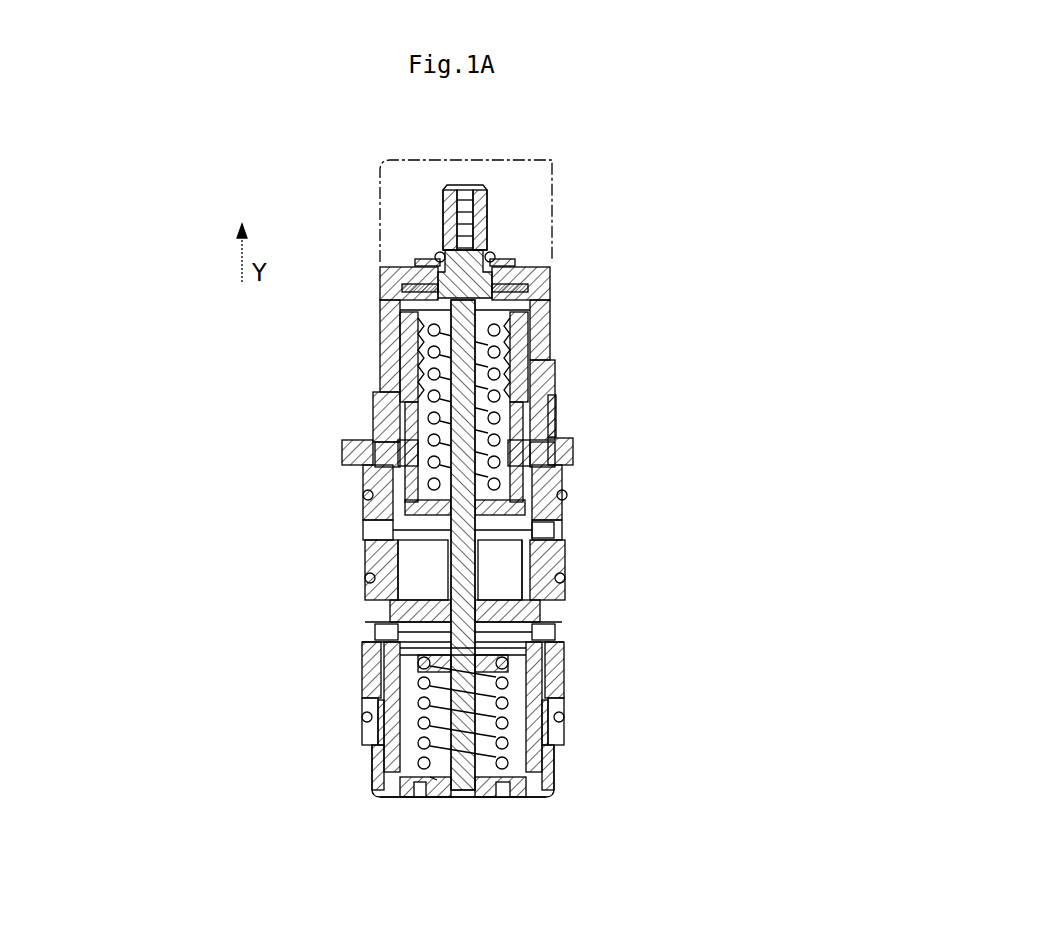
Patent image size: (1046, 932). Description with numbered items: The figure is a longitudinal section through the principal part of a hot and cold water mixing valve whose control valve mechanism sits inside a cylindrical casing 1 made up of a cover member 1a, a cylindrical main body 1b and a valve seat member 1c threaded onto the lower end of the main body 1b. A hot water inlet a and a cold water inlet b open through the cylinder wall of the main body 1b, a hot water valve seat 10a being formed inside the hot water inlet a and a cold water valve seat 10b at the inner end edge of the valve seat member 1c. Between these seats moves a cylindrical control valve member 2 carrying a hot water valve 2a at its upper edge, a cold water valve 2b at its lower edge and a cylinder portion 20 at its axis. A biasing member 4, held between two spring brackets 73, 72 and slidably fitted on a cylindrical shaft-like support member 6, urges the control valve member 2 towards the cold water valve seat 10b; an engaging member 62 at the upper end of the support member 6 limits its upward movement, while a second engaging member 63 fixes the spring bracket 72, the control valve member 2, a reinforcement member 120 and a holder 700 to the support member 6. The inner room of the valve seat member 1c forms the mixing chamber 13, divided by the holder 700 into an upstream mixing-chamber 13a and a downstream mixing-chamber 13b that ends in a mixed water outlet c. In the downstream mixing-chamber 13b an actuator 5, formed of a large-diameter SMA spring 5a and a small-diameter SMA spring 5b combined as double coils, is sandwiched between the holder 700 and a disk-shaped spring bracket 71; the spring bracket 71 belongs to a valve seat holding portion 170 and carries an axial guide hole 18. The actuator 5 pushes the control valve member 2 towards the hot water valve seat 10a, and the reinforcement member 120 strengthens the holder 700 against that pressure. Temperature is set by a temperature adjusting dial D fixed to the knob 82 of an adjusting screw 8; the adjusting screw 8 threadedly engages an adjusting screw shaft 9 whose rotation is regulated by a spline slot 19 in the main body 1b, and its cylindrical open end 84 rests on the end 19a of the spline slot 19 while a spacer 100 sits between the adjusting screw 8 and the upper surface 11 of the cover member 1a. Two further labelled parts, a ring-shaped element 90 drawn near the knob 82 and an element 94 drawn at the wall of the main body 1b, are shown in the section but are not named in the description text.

The casing 1 is at (508, 528).
The cover member 1a is at (503, 326).
The main body 1b is at (563, 515).
The valve seat member 1c is at (565, 728).
The control valve member 2 is at (406, 581).
The hot water valve 2a is at (390, 542).
The cold water valve 2b is at (367, 615).
The biasing member 4 is at (555, 432).
The actuator 5 is at (463, 849).
The SMA spring 5a is at (447, 800).
The SMA spring 5b is at (455, 800).
The support member 6 is at (484, 800).
The adjusting screw 8 is at (542, 193).
The adjusting screw shaft 9 is at (380, 323).
The hot water valve seat 10a is at (377, 528).
The cold water valve seat 10b is at (395, 640).
The upper surface 11 is at (495, 290).
The mixing chamber 13 is at (473, 723).
The upstream mixing-chamber 13a is at (398, 662).
The downstream mixing-chamber 13b is at (520, 762).
The guide hole 18 is at (555, 795).
The spline slot 19 is at (395, 418).
The end of spline slot 19a is at (387, 388).
The cylinder portion 20 is at (557, 570).
The engaging member 62 is at (530, 300).
The engaging member 63 is at (555, 696).
The spring bracket 71 is at (418, 797).
The spring bracket 72 is at (563, 507).
The spring bracket 73 is at (410, 317).
The knob 82 is at (487, 227).
The cylindrical open end 84 is at (535, 348).
The O-ring 90 is at (435, 262).
The O-ring 94 is at (363, 518).
The spacer 100 is at (503, 335).
The reinforcement member 120 is at (377, 707).
The valve seat holding portion 170 is at (505, 797).
The holder 700 is at (555, 652).
The temperature adjusting dial D is at (507, 157).
The hot water inlet a is at (557, 537).
The cold water inlet b is at (365, 630).
The mixed water outlet c is at (413, 777).